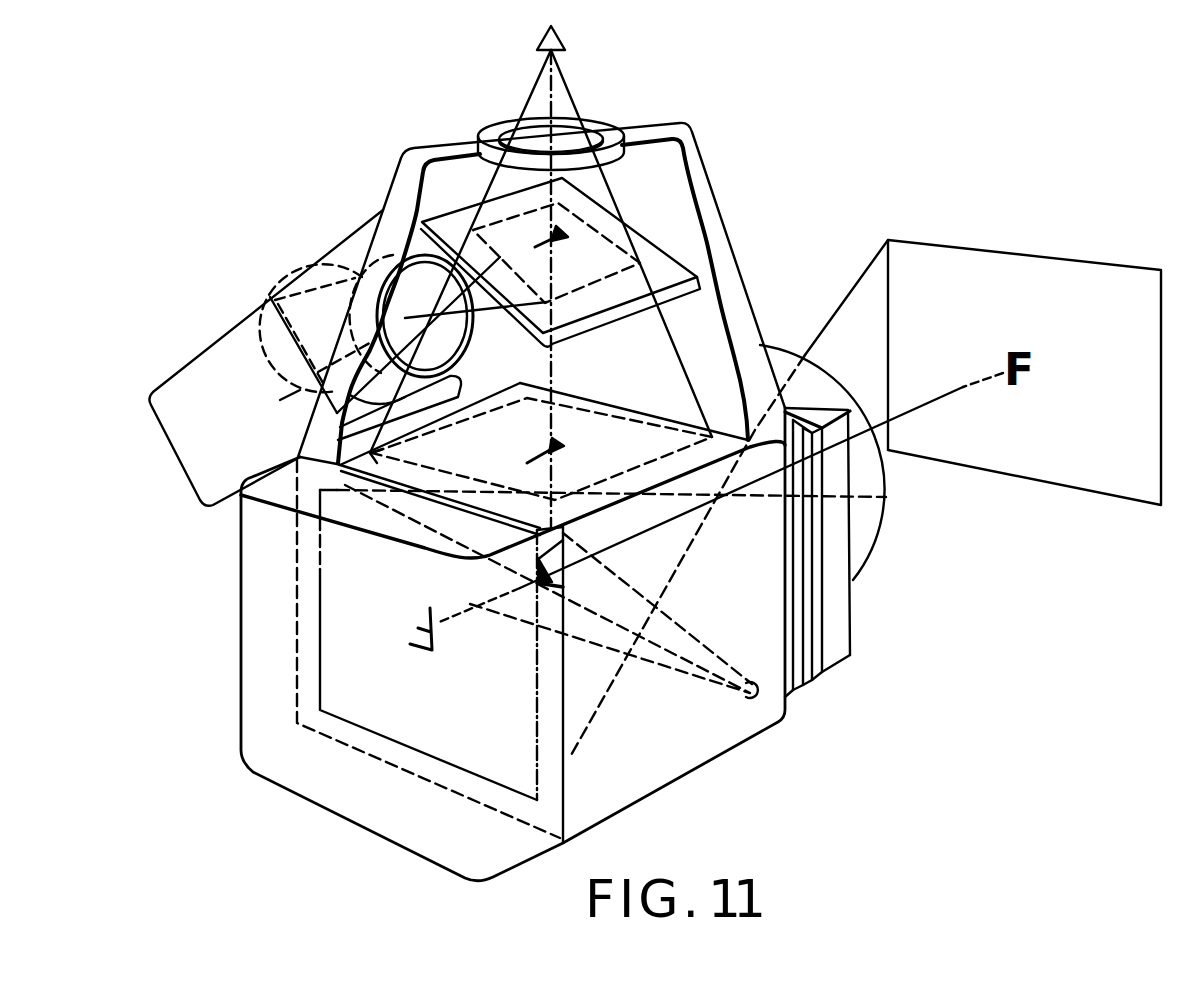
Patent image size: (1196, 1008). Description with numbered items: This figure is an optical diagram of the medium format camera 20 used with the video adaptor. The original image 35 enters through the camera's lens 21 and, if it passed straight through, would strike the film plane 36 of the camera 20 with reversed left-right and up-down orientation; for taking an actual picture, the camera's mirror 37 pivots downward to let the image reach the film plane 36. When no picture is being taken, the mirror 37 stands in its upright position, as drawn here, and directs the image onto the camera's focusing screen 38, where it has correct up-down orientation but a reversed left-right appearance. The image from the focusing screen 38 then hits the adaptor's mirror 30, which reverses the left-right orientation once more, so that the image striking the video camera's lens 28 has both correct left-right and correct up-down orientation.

The medium format camera 20 is at (663, 750).
The lens 21 is at (863, 557).
The video camera lens 28 is at (447, 341).
The mirror 30 is at (663, 260).
The original image 35 is at (1083, 467).
The film plane 36 is at (430, 708).
The mirror 37 is at (697, 637).
The focusing screen 38 is at (608, 433).